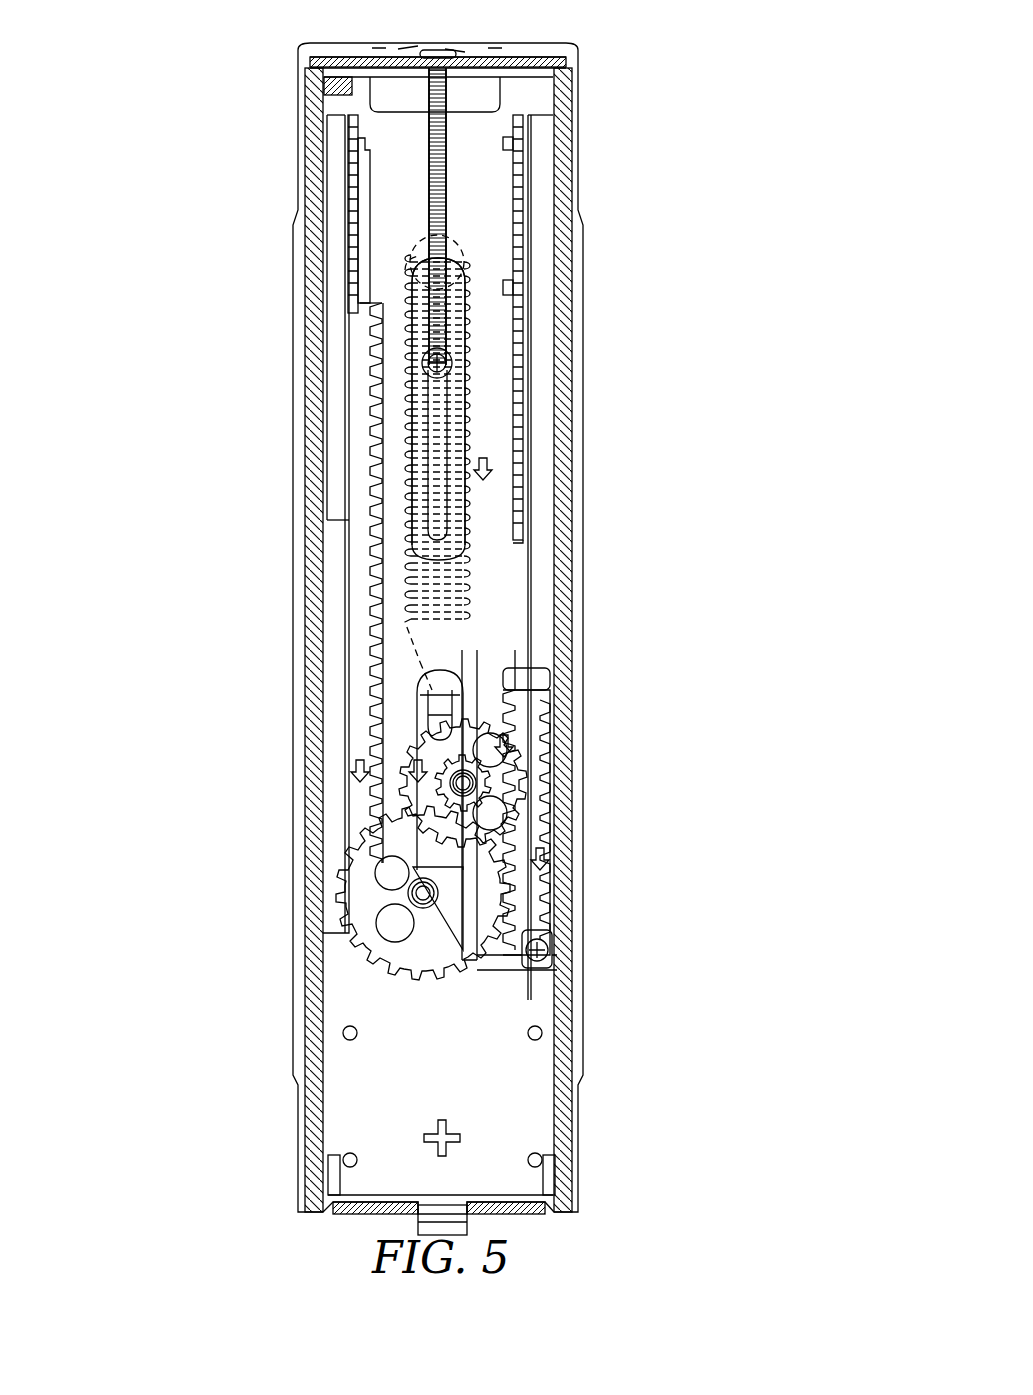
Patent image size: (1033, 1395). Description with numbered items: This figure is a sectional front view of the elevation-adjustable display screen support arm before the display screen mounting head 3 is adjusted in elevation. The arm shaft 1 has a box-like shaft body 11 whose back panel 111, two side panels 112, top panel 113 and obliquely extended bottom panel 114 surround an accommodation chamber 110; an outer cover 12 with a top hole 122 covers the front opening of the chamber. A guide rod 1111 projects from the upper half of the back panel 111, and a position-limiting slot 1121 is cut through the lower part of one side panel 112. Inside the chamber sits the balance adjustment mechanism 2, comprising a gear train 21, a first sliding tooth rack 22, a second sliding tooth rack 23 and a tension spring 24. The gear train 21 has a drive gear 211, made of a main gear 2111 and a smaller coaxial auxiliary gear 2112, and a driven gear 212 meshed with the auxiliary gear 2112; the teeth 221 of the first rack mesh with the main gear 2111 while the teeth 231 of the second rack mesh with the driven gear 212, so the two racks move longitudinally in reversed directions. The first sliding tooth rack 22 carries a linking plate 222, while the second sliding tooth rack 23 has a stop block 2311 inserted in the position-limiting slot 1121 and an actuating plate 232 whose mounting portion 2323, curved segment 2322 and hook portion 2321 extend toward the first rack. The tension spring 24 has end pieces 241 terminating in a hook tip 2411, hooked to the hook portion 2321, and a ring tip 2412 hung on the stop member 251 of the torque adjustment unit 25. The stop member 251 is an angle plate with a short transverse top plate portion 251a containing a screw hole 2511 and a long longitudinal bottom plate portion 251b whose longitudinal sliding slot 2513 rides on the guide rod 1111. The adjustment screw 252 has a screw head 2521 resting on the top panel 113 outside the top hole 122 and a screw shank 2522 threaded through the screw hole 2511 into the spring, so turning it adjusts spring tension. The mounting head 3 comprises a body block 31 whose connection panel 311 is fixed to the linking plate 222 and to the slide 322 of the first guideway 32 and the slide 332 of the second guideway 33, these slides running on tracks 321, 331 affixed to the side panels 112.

The arm shaft 1 is at (262, 24).
The box-like shaft body 11 is at (696, 289).
The accommodation chamber 110 is at (500, 566).
The back panel 111 is at (480, 315).
The guide rod 1111 is at (430, 415).
The side panels 112 is at (560, 1050).
The position-limiting slot 1121 is at (580, 1015).
The top panel 113 is at (333, 83).
The bottom panel 114 is at (523, 1214).
The outer cover 12 is at (367, 63).
The top hole 122 is at (413, 40).
The balance adjustment mechanism 2 is at (205, 324).
The gear train 21 is at (696, 989).
The drive gear 211 is at (715, 784).
The main gear 2111 is at (495, 820).
The auxiliary gear 2112 is at (555, 762).
The driven gear 212 is at (470, 963).
The first sliding tooth rack 22 is at (358, 350).
The teeth 221 is at (373, 398).
The linking plate 222 is at (365, 175).
The second sliding tooth rack 23 is at (696, 714).
The teeth 231 is at (575, 826).
The stop block 2311 is at (575, 856).
The actuating plate 232 is at (445, 748).
The hook portion 2321 is at (447, 725).
The curved segment 2322 is at (483, 910).
The mounting portion 2323 is at (437, 945).
The tension spring 24 is at (408, 318).
The end pieces 241 is at (180, 613).
The hook tip 2411 is at (395, 645).
The ring tip 2412 is at (423, 280).
The torque adjustment unit 25 is at (730, 217).
The stop member 251 is at (180, 202).
The short transverse top plate portion 251a is at (472, 252).
The long longitudinal bottom plate portion 251b is at (470, 292).
The screw hole 2511 is at (412, 248).
The longitudinal sliding slot 2513 is at (453, 362).
The adjustment screw 252 is at (570, 24).
The screw head 2521 is at (442, 66).
The screw shank 2522 is at (442, 133).
The display screen mounting head 3 is at (533, 155).
The body block 31 is at (696, 179).
The connection panel 311 is at (355, 143).
The first guideway 32 is at (180, 438).
The track 321 is at (333, 450).
The slide 322 is at (347, 508).
The second guideway 33 is at (696, 436).
The track 331 is at (538, 452).
The slide 332 is at (536, 495).